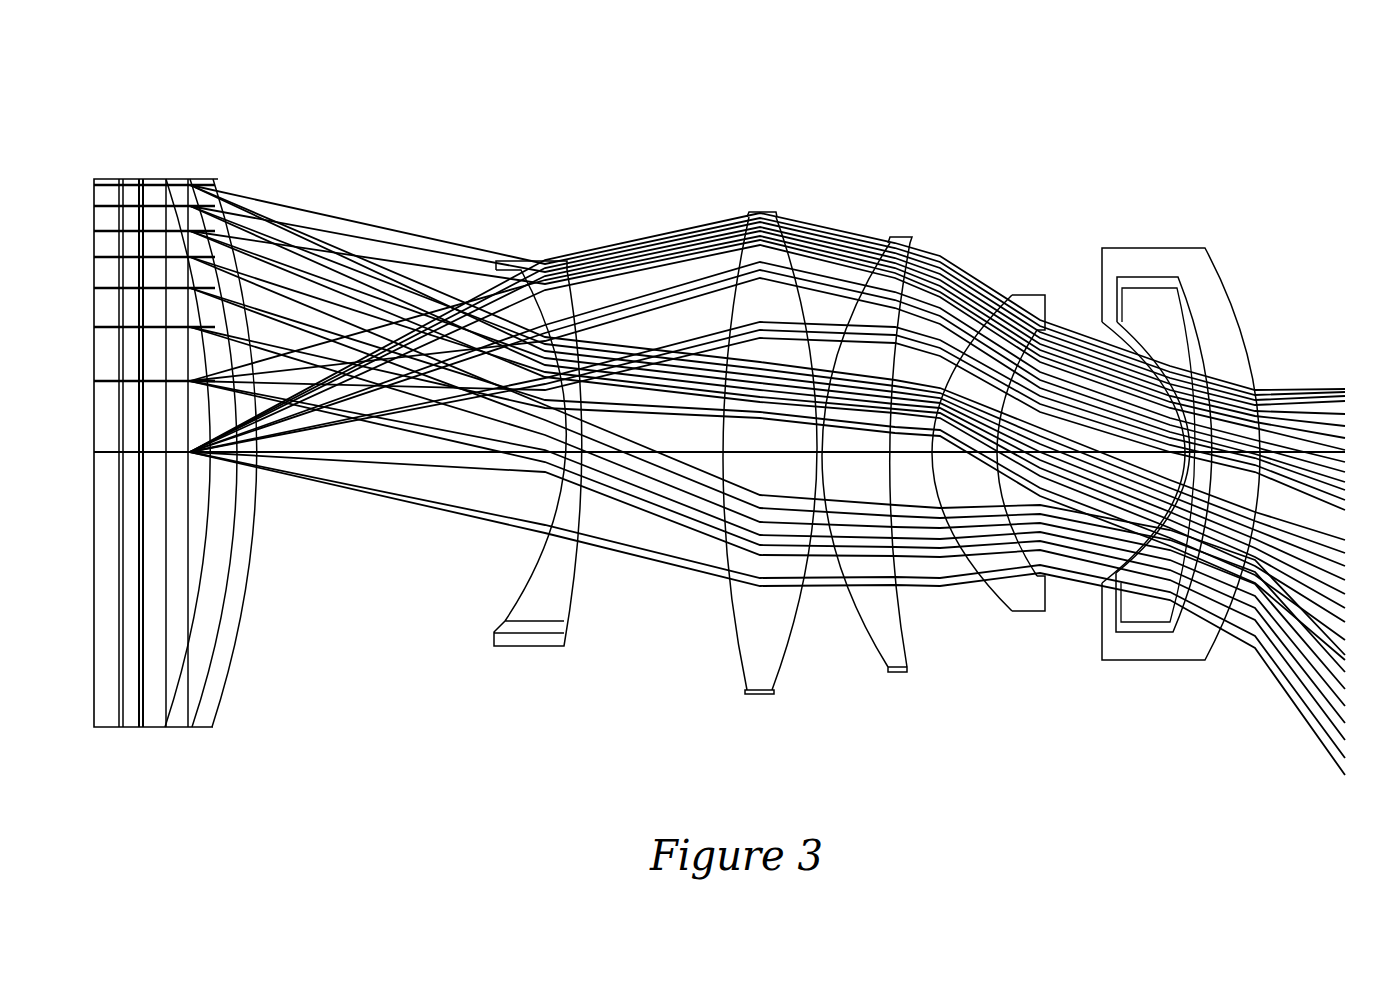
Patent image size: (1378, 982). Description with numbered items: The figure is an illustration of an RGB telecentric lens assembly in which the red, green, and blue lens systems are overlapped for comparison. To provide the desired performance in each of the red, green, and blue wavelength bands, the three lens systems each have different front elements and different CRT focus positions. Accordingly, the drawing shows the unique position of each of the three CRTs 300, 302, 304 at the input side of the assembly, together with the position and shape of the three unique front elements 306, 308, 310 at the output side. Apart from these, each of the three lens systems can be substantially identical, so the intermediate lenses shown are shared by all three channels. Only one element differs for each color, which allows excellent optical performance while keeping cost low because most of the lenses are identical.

The CRT 300 is at (96, 176).
The CRT 302 is at (119, 176).
The CRT 304 is at (143, 176).
The front element 306 is at (1111, 292).
The front element 308 is at (1143, 274).
The front element 310 is at (1187, 243).